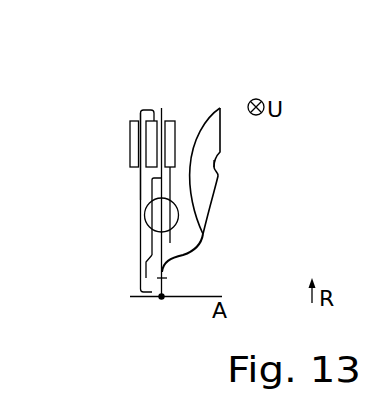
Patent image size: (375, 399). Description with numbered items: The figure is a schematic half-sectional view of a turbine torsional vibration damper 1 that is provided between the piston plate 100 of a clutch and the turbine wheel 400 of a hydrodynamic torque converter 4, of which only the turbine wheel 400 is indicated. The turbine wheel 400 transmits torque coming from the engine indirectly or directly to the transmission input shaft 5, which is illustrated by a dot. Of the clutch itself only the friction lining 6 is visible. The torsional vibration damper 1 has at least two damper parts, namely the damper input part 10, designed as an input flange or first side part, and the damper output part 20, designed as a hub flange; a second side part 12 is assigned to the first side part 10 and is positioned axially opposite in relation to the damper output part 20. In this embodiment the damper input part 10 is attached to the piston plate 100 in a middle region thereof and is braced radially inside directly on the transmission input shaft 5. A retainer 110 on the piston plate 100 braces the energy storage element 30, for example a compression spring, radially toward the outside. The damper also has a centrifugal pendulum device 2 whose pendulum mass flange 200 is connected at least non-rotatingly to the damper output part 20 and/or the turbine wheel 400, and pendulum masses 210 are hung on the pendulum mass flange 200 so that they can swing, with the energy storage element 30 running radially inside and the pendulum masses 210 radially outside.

The torsional vibration damper 1 is at (179, 250).
The centrifugal pendulum device 2 is at (184, 120).
The hydrodynamic torque converter 4 is at (242, 172).
The transmission input shaft 5 is at (131, 297).
The friction lining 6 is at (130, 148).
The damper input part 10 is at (140, 208).
The second side part 12 is at (178, 215).
The damper output part 20 is at (142, 228).
The energy storage element 30 is at (178, 224).
The piston plate 100 is at (146, 197).
The retainer 110 is at (150, 200).
The pendulum mass flange 200 is at (162, 108).
The pendulum masses 210 is at (175, 135).
The turbine wheel 400 is at (221, 108).